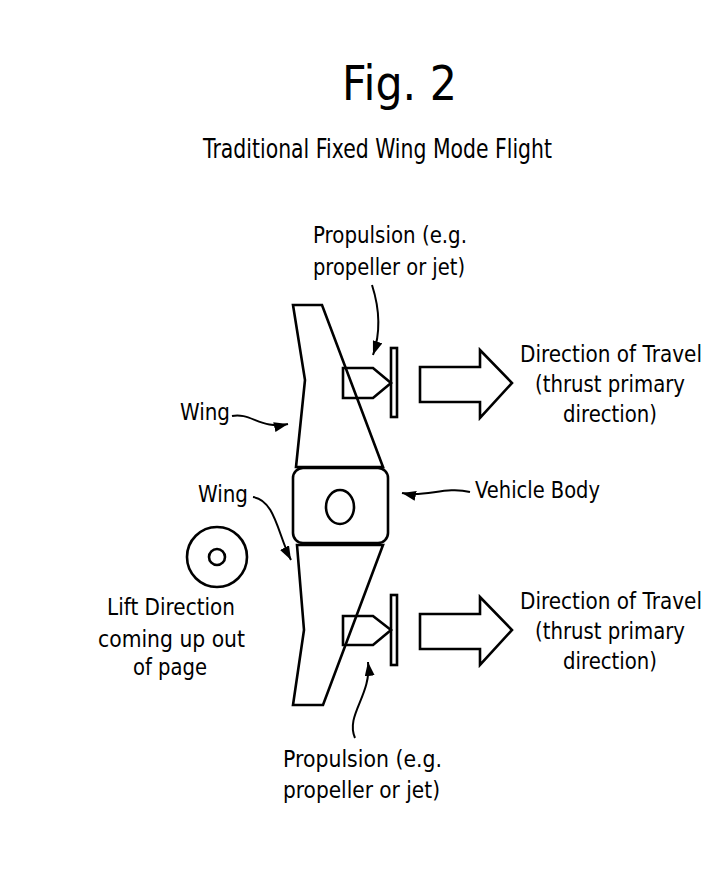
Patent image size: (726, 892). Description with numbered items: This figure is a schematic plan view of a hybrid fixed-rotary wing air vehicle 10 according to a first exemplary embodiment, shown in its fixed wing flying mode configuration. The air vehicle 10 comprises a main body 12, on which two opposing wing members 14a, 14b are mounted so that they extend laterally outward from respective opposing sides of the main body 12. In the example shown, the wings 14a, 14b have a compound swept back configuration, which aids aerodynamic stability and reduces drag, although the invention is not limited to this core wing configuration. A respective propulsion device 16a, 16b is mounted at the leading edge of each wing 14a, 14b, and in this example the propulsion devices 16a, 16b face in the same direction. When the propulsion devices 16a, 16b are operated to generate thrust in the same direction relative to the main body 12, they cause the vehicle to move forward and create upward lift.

The air vehicle 10 is at (258, 337).
The main body 12 is at (372, 522).
The wing member 14a is at (362, 445).
The wing member 14b is at (353, 572).
The propulsion device 16a is at (395, 362).
The propulsion device 16b is at (395, 655).